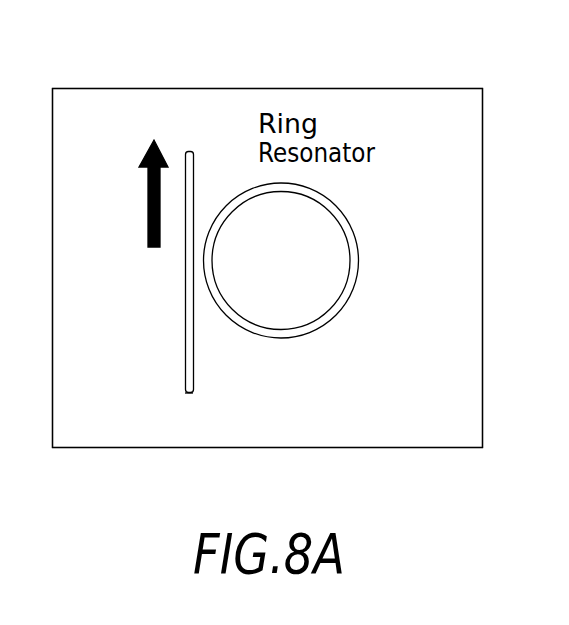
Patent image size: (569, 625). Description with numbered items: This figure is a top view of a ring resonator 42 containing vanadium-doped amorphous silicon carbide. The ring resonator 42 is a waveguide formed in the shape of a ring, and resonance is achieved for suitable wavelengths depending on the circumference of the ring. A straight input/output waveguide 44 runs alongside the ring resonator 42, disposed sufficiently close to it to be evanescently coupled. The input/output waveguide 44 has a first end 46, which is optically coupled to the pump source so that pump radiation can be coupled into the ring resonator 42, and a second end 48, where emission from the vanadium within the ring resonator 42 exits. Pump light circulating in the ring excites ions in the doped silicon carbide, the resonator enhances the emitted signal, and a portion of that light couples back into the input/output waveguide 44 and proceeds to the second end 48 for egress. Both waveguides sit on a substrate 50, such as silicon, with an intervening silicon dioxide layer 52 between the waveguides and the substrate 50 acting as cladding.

The ring resonator 42 is at (356, 247).
The input/output waveguide 44 is at (183, 271).
The first end 46 is at (173, 396).
The second end 48 is at (187, 141).
The substrate 50 is at (422, 401).
The silicon dioxide layer 52 is at (268, 268).